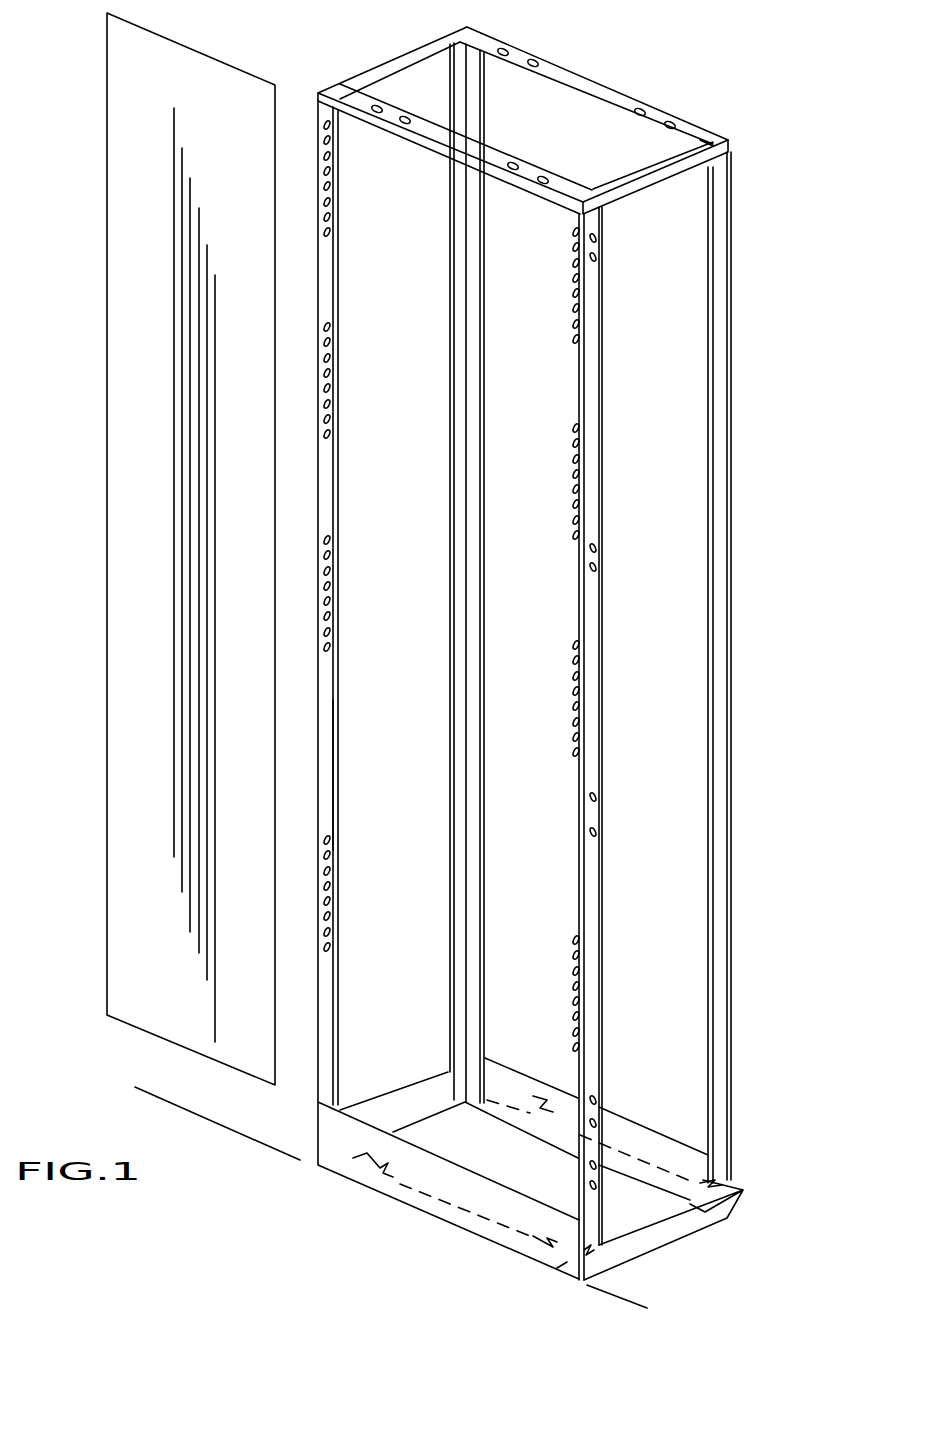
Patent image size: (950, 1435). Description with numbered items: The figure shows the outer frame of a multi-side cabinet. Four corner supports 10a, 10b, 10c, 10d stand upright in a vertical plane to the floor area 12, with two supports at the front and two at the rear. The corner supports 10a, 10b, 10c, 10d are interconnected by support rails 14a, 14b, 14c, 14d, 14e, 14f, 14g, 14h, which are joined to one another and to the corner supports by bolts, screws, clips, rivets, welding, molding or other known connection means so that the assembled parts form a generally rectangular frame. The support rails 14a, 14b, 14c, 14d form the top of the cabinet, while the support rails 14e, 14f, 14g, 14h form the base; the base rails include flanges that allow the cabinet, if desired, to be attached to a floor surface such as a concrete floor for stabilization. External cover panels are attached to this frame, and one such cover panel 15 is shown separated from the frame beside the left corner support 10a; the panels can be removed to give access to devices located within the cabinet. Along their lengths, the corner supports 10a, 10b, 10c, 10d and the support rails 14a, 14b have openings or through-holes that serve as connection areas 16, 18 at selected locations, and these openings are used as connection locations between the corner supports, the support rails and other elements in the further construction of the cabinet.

The corner support 10a is at (363, 603).
The corner support 10b is at (475, 88).
The corner support 10c is at (720, 367).
The corner support 10d is at (598, 600).
The floor area 12 is at (590, 1285).
The support rail 14a is at (582, 82).
The support rail 14b is at (625, 198).
The support rail 14c is at (422, 135).
The support rail 14d is at (438, 43).
The support rail 14e is at (407, 1103).
The support rail 14f is at (527, 1072).
The support rail 14g is at (657, 1250).
The support rail 14h is at (367, 1193).
The cover panel 15 is at (130, 232).
The connection area 16 is at (326, 545).
The connection area 18 is at (330, 775).